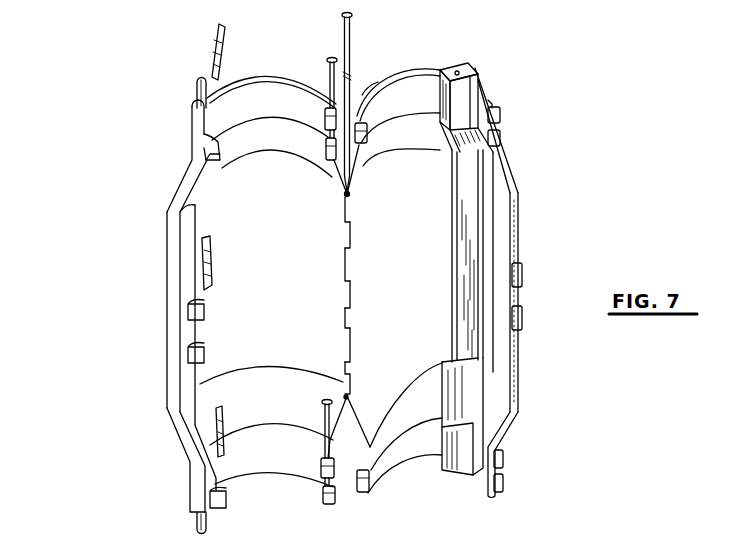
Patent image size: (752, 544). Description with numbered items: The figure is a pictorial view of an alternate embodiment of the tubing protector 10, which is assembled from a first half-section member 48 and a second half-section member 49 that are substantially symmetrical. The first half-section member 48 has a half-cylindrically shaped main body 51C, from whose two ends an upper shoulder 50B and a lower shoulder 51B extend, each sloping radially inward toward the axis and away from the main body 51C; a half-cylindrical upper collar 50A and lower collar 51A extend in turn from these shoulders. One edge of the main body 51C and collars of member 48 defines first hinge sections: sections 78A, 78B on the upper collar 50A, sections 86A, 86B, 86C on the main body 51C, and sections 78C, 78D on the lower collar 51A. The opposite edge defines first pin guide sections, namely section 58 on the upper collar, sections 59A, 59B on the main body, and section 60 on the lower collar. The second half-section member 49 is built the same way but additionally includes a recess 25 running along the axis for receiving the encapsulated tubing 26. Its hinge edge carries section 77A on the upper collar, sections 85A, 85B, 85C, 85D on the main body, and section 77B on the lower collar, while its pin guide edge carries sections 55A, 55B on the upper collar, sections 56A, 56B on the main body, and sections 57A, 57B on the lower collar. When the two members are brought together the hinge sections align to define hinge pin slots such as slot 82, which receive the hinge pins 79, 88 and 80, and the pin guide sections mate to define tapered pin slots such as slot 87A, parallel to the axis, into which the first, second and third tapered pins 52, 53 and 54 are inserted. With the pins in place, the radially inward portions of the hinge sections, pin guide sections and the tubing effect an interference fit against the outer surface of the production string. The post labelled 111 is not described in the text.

The protector 10 is at (90, 449).
The recess 25 is at (447, 67).
The encapsulated tubing 26 is at (468, 394).
The first half-section member 48 is at (251, 195).
The second half-section member 49 is at (409, 195).
The upper collar 50A is at (244, 96).
The upper shoulder 50B is at (183, 182).
The lower collar 51A is at (252, 462).
The lower shoulder 51B is at (188, 436).
The main body 51C is at (172, 278).
The first tapered pin 52 is at (208, 38).
The second tapered pin 53 is at (200, 247).
The third tapered pin 54 is at (224, 416).
The second pin guide section 55A is at (502, 116).
The second pin guide section 55B is at (502, 139).
The second pin guide section 56A is at (523, 276).
The second pin guide section 56B is at (523, 322).
The second pin guide section 57A is at (504, 460).
The second pin guide section 57B is at (504, 484).
The first pin guide section 58 is at (200, 152).
The first pin guide section 59A is at (190, 319).
The first pin guide section 59B is at (190, 362).
The first pin guide section 60 is at (213, 500).
The second hinge section 77A is at (366, 92).
The second hinge section 77B is at (370, 484).
The first hinged section 78A is at (325, 118).
The first hinged section 78B is at (326, 150).
The first hinged section 78C is at (322, 470).
The first hinged section 78D is at (326, 504).
The hinge pin 79 is at (331, 56).
The hinge pin 80 is at (323, 414).
The hinge pin slot 82 is at (357, 110).
The second hinge section 85A is at (352, 212).
The second hinge section 85B is at (352, 266).
The second hinge section 85C is at (352, 340).
The second hinge section 85D is at (352, 380).
The first hinged section 86A is at (345, 233).
The first hinged section 86B is at (345, 307).
The first hinged section 86C is at (343, 376).
The first tapered pin slot 87A is at (492, 88).
The hinge pin 88 is at (352, 32).
The pivot post 111 is at (196, 86).